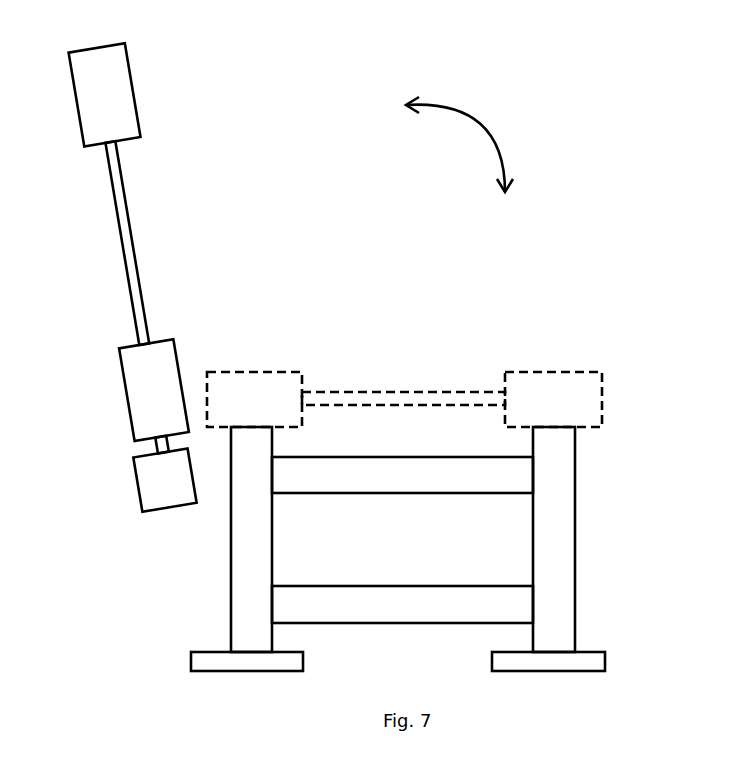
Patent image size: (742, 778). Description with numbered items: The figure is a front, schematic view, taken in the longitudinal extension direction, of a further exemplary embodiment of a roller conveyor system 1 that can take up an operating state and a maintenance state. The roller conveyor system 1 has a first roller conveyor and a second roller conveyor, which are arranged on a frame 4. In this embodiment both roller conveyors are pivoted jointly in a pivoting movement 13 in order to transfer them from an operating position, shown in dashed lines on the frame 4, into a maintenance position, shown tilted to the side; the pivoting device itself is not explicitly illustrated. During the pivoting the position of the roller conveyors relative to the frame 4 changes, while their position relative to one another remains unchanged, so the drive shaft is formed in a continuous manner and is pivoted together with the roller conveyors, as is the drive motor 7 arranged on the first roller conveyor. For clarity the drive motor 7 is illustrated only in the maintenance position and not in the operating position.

The roller conveyor system 1 is at (616, 165).
The frame 4 is at (238, 573).
The drive motor 7 is at (155, 480).
The pivoting movement 13 is at (485, 122).